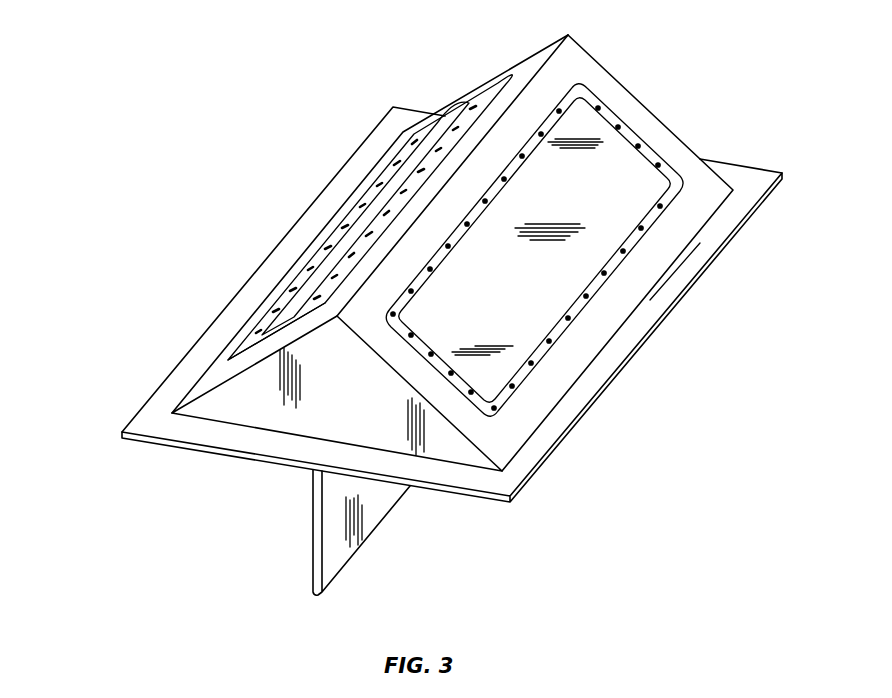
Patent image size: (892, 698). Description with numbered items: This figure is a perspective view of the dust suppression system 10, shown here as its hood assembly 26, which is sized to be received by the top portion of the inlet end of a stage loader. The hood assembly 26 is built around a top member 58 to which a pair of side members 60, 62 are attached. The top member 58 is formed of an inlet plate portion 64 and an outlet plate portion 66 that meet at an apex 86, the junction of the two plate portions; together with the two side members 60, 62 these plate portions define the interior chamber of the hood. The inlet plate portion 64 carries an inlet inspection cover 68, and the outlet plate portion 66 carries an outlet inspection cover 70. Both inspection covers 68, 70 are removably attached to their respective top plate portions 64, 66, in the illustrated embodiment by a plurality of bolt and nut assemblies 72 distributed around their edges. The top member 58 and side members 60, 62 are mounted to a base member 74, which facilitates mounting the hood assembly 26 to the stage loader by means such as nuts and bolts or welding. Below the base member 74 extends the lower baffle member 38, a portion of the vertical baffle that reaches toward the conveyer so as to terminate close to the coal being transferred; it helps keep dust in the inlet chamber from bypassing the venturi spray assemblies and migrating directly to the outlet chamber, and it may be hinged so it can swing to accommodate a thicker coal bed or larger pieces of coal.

The dust suppression system 10 is at (228, 129).
The hood assembly 26 is at (412, 319).
The lower baffle member 38 is at (312, 570).
The top member 58 is at (559, 239).
The side member 60 is at (246, 398).
The side member 62 is at (487, 82).
The inlet plate portion 64 is at (200, 384).
The outlet plate portion 66 is at (635, 279).
The inlet inspection cover 68 is at (344, 208).
The outlet inspection cover 70 is at (625, 172).
The bolt and nut assemblies 72 is at (513, 389).
The base member 74 is at (272, 459).
The apex 86 is at (547, 60).